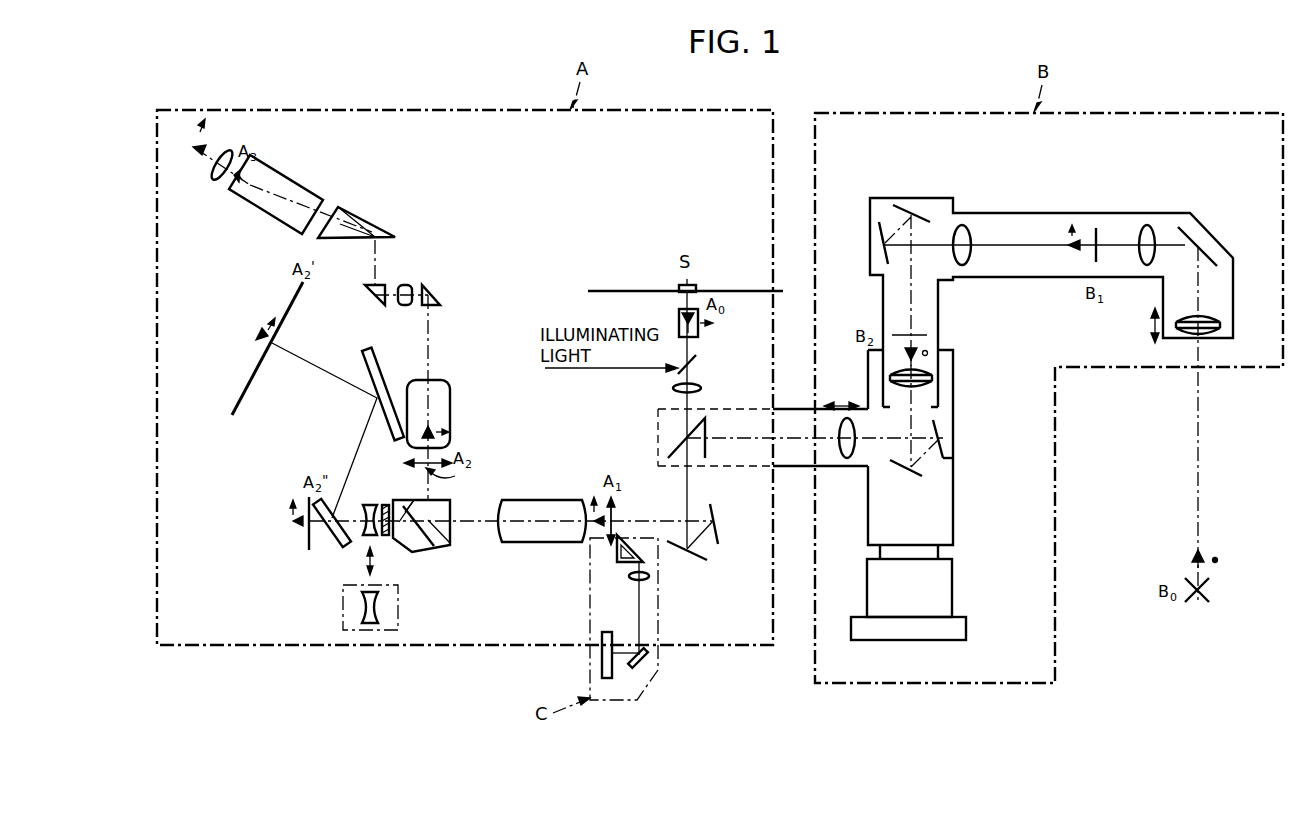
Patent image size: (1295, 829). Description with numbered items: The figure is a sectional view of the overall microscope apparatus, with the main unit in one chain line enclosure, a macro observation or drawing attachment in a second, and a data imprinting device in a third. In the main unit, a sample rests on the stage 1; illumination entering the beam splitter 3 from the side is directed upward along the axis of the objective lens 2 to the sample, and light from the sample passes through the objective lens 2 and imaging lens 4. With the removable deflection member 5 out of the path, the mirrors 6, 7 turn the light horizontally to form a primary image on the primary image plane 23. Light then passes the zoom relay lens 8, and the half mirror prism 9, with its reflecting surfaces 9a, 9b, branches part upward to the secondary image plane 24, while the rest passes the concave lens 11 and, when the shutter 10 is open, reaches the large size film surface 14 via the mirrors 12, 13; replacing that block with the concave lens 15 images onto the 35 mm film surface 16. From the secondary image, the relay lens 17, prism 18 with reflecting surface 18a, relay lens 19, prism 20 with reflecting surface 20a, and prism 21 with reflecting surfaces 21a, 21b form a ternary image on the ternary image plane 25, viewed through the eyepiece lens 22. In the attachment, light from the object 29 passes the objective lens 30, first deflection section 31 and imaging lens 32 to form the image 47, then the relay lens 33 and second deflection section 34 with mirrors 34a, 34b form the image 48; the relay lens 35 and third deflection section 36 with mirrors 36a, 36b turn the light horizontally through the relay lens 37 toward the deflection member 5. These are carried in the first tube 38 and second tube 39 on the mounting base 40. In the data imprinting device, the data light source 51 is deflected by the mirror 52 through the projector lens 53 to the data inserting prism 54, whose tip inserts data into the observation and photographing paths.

The stage 1 is at (735, 291).
The objective lens 2 is at (677, 320).
The beam splitter 3 is at (697, 355).
The imaging lens 4 is at (705, 387).
The deflection member 5 is at (670, 455).
The mirror 6 is at (692, 553).
The mirror 7 is at (720, 528).
The zoom relay lens 8 is at (533, 500).
The half mirror prism 9 is at (445, 548).
The reflecting surface 9a is at (414, 503).
The reflecting surface 9b is at (410, 553).
The shutter 10 is at (385, 503).
The concave lens 11 is at (369, 503).
The mirror 12 is at (332, 545).
The mirror 13 is at (366, 358).
The large size film surface 14 is at (238, 400).
The concave lens 15 is at (380, 617).
The 35 mm film surface 16 is at (306, 542).
The relay lens 17 is at (451, 398).
The prism 18 is at (443, 297).
The reflecting surface 18a is at (432, 290).
The relay lens 19 is at (405, 284).
The prism 20 is at (375, 302).
The reflecting surface 20a is at (372, 292).
The prism 21 is at (345, 218).
The reflecting surface 21a is at (375, 226).
The reflecting surface 21b is at (333, 240).
The eyepiece lens 22 is at (224, 155).
The primary image plane 23 is at (614, 508).
The secondary image plane 24 is at (458, 476).
The ternary image plane 25 is at (252, 152).
The object 29 is at (1205, 590).
The objective lens 30 is at (1222, 325).
The first deflection section 31 is at (1210, 250).
The imaging lens 32 is at (1148, 226).
The relay lens 33 is at (966, 226).
The second deflection section 34 is at (880, 250).
The mirror 34a is at (878, 230).
The mirror 34b is at (900, 205).
The relay lens 35 is at (945, 379).
The third deflection section 36 is at (945, 428).
The mirror 36a is at (917, 476).
The mirror 36b is at (956, 458).
The relay lens 37 is at (847, 460).
The first tube 38 is at (1013, 213).
The second tube 39 is at (950, 533).
The mounting base 40 is at (950, 579).
The image 47 is at (1098, 232).
The image 48 is at (928, 335).
The data light source 51 is at (606, 680).
The mirror 52 is at (646, 662).
The projector lens 53 is at (648, 578).
The data inserting prism 54 is at (630, 540).